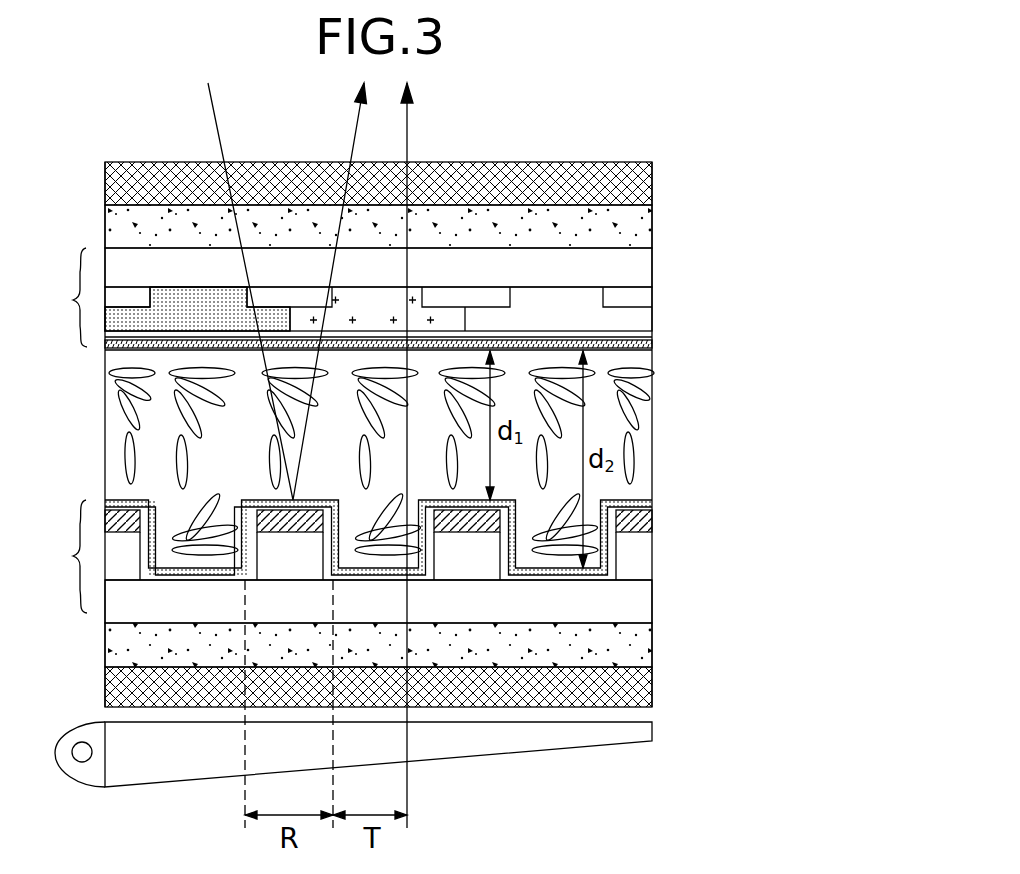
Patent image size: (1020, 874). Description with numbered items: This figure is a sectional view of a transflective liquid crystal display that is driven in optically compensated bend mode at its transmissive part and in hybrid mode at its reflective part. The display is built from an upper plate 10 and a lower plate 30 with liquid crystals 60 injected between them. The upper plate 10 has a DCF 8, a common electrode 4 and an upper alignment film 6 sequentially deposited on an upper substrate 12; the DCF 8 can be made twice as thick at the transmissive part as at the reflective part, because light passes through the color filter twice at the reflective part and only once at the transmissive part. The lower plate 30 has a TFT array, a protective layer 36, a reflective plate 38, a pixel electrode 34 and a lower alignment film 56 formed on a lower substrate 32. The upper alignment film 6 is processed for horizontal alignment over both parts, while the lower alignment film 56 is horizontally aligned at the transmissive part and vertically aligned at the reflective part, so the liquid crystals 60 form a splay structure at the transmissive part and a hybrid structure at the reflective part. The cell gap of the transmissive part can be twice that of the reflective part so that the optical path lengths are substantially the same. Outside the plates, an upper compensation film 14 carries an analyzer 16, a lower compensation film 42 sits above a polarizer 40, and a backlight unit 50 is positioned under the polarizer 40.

The analyzer 16 is at (652, 182).
The upper compensation film 14 is at (652, 232).
The upper substrate 12 is at (652, 272).
The upper plate 10 is at (58, 297).
The DCF 8 is at (652, 322).
The common electrode 4 is at (652, 340).
The upper alignment film 6 is at (652, 350).
The liquid crystals 60 is at (114, 377).
The lower alignment film 56 is at (652, 494).
The pixel electrode 34 is at (652, 501).
The reflective plate 38 is at (652, 520).
The protective layer 36 is at (652, 565).
The lower plate 30 is at (59, 556).
The lower substrate 32 is at (652, 605).
The lower compensation film 42 is at (652, 647).
The polarizer 40 is at (652, 690).
The backlight unit 50 is at (652, 735).